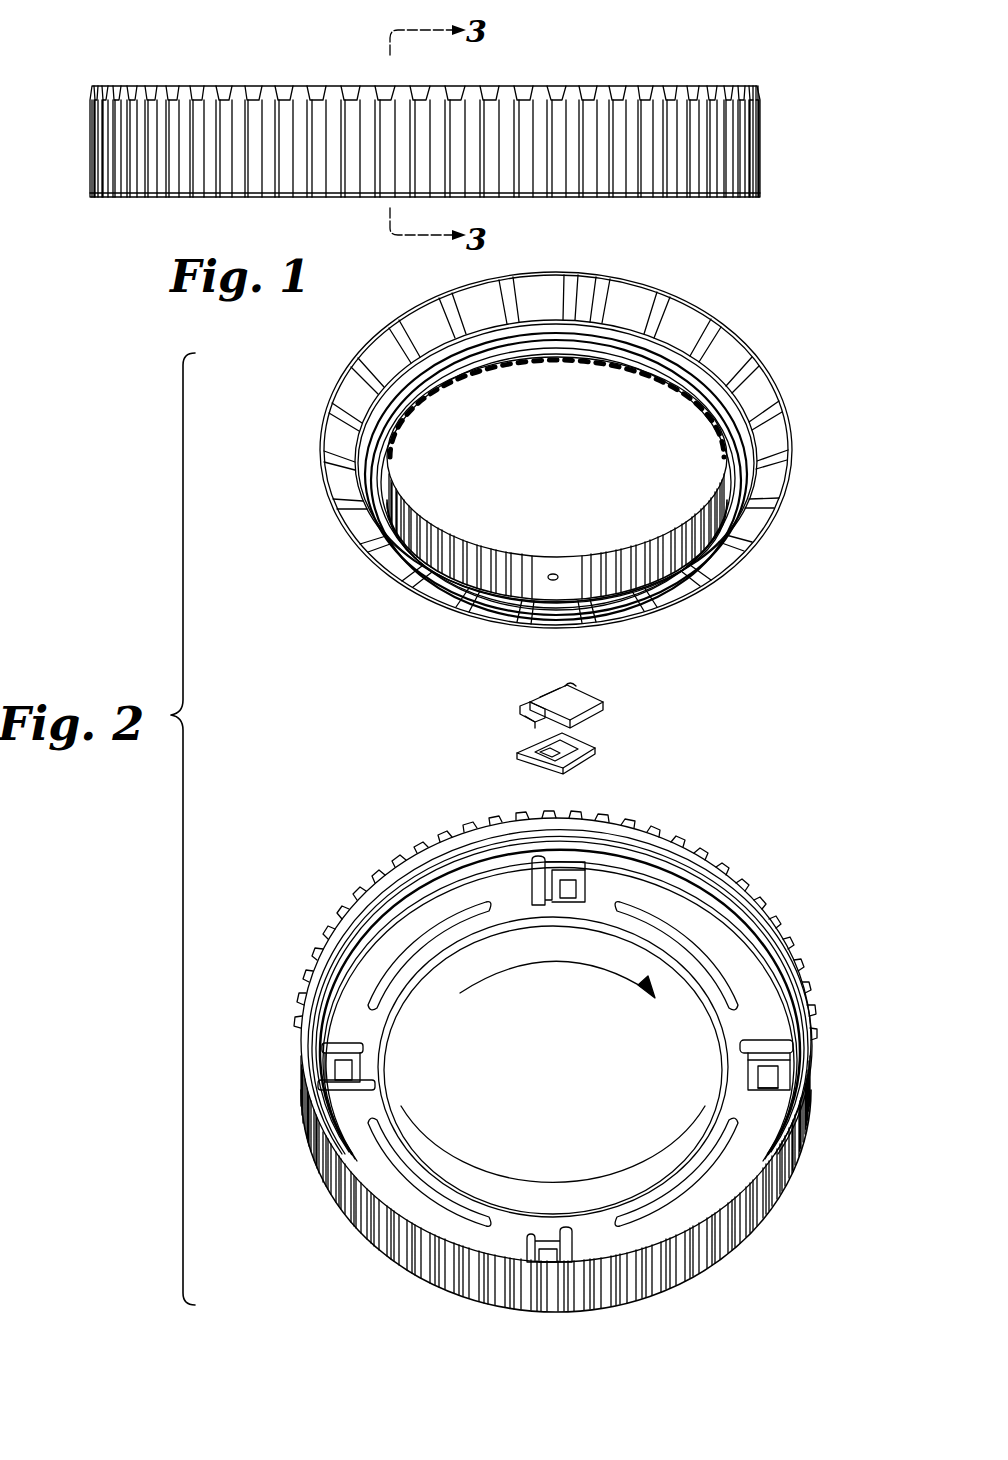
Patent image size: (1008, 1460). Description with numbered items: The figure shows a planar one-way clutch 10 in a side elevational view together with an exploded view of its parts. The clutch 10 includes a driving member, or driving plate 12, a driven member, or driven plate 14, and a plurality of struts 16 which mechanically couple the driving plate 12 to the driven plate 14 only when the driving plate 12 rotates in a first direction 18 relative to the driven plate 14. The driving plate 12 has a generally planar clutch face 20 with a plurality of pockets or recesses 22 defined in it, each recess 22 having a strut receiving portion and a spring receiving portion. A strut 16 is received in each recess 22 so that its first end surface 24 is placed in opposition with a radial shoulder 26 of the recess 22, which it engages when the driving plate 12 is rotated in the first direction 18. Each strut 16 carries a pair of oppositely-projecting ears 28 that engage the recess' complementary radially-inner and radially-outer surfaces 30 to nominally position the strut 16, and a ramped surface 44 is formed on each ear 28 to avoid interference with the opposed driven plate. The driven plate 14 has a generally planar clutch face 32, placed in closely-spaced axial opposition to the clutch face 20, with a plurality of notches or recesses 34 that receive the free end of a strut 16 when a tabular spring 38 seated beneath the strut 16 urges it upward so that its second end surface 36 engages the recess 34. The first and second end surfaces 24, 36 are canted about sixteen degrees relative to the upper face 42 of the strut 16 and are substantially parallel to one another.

In FIG. 1, the planar one-way clutch 10 is at (471, 121).
In FIG. 1, the driving plate 12 is at (762, 117).
In FIG. 2, the driving plate 12 is at (553, 1044).
In FIG. 2, the driven plate 14 is at (591, 447).
In FIG. 2, the strut 16 is at (584, 710).
In FIG. 2, the first direction 18 is at (552, 966).
In FIG. 2, the clutch face 20 is at (760, 1005).
In FIG. 2, the recess 22 is at (778, 1078).
In FIG. 2, the first end surface 24 is at (540, 695).
In FIG. 2, the radial shoulder 26 is at (790, 1062).
In FIG. 2, the ears 28 is at (534, 704).
In FIG. 2, the radially-inner and radially-outer surfaces 30 is at (768, 1040).
In FIG. 2, the clutch face 32 is at (765, 418).
In FIG. 2, the recess 34 is at (533, 300).
In FIG. 2, the second end surface 36 is at (564, 702).
In FIG. 2, the tabular spring 38 is at (597, 748).
In FIG. 2, the upper face 42 is at (572, 684).
In FIG. 2, the ramped surface 44 is at (530, 722).